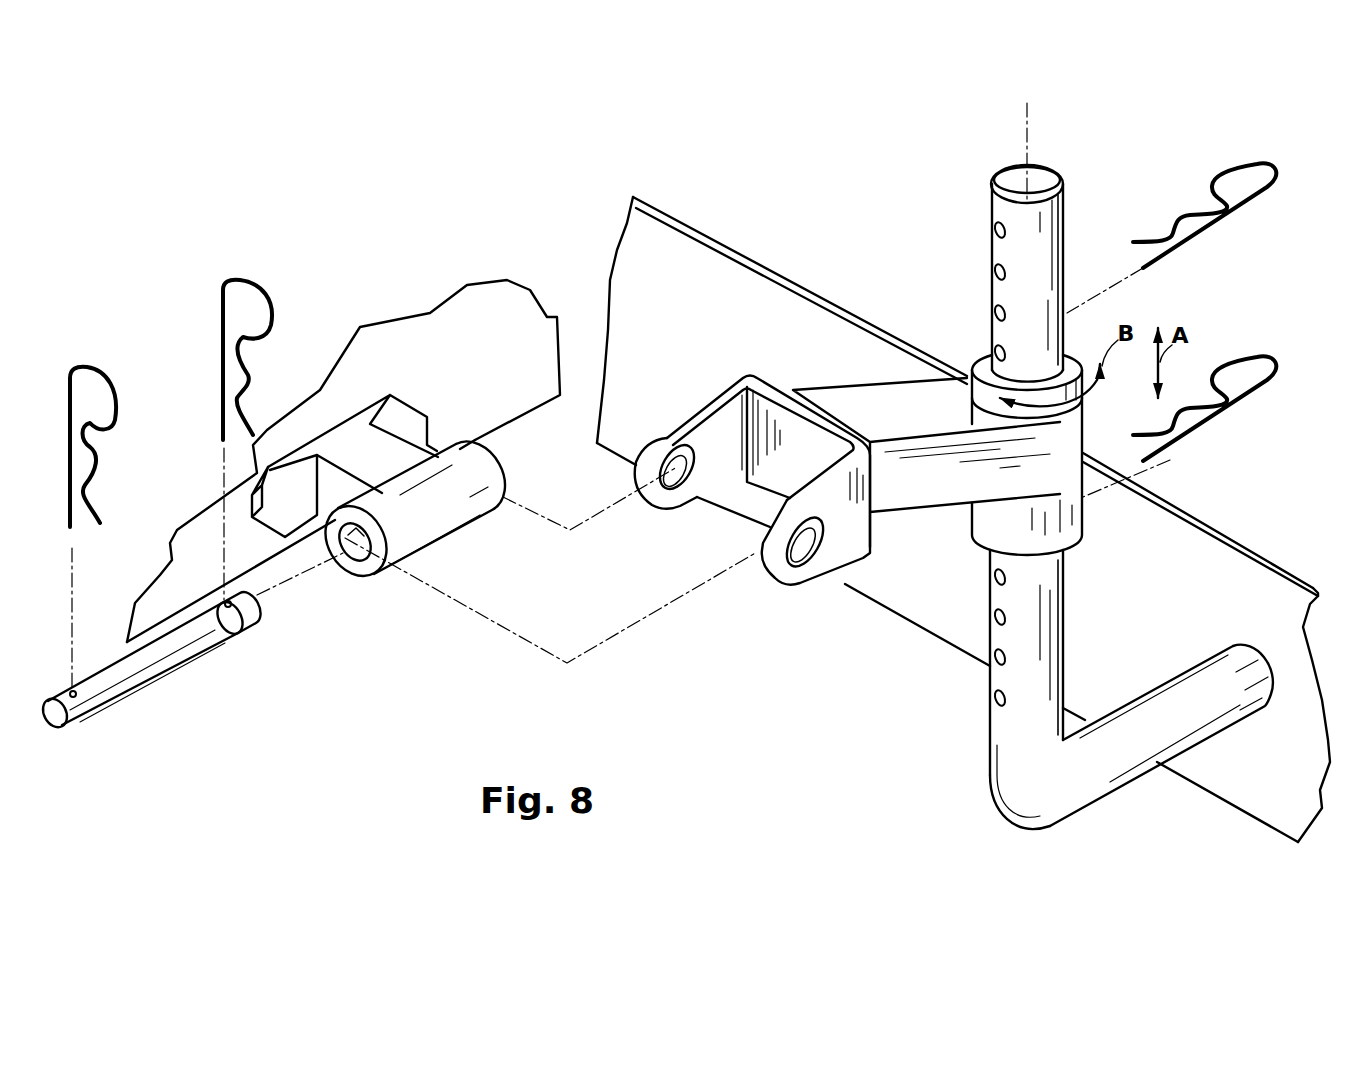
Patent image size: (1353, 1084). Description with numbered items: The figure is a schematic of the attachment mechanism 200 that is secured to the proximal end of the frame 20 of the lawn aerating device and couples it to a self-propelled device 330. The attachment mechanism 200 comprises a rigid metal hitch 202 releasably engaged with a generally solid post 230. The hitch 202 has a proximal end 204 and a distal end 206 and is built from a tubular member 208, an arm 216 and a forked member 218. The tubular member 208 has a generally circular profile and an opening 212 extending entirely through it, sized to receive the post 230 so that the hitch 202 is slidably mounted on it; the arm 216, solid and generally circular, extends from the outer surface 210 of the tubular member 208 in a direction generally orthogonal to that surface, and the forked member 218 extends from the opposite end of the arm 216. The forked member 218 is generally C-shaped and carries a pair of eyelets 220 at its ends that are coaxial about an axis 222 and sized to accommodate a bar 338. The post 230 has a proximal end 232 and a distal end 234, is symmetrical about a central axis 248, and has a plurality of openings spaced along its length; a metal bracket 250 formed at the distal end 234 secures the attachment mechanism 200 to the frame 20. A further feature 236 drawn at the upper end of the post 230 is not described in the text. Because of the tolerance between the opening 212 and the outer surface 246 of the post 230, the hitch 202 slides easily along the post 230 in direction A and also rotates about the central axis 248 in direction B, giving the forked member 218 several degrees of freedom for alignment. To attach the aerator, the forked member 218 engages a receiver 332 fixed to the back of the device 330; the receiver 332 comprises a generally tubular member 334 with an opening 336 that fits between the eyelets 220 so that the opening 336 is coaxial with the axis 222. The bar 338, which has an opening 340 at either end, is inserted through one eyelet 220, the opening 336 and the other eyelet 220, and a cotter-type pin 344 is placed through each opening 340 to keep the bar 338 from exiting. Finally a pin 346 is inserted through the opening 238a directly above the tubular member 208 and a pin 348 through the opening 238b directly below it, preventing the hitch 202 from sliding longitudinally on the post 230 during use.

The frame 20 is at (1235, 812).
The attachment mechanism 200 is at (790, 785).
The hitch 202 is at (935, 522).
The proximal end 204 is at (1072, 550).
The distal end 206 is at (715, 467).
The tubular member 208 is at (1083, 535).
The outer surface 210 is at (1083, 440).
The opening 212 is at (990, 364).
The arm 216 is at (857, 400).
The forked member 218 is at (794, 582).
The eyelets 220 is at (662, 468).
The axis 222 is at (290, 585).
The post 230 is at (1070, 230).
The proximal end 232 is at (1072, 165).
The distal end 234 is at (1000, 824).
The pin bore 236 is at (1006, 174).
The opening 238a is at (998, 348).
The opening 238b is at (1004, 580).
The outer surface 246 is at (1005, 745).
The central axis 248 is at (1020, 118).
The metal bracket 250 is at (1195, 712).
The self-propelled device 330 is at (530, 490).
The receiver 332 is at (448, 405).
The tubular member 334 is at (497, 468).
The opening 336 is at (350, 552).
The bar 338 is at (160, 655).
The opening 340 is at (75, 717).
The pin 344 is at (120, 397).
The pin 346 is at (1215, 229).
The pin 348 is at (1225, 422).